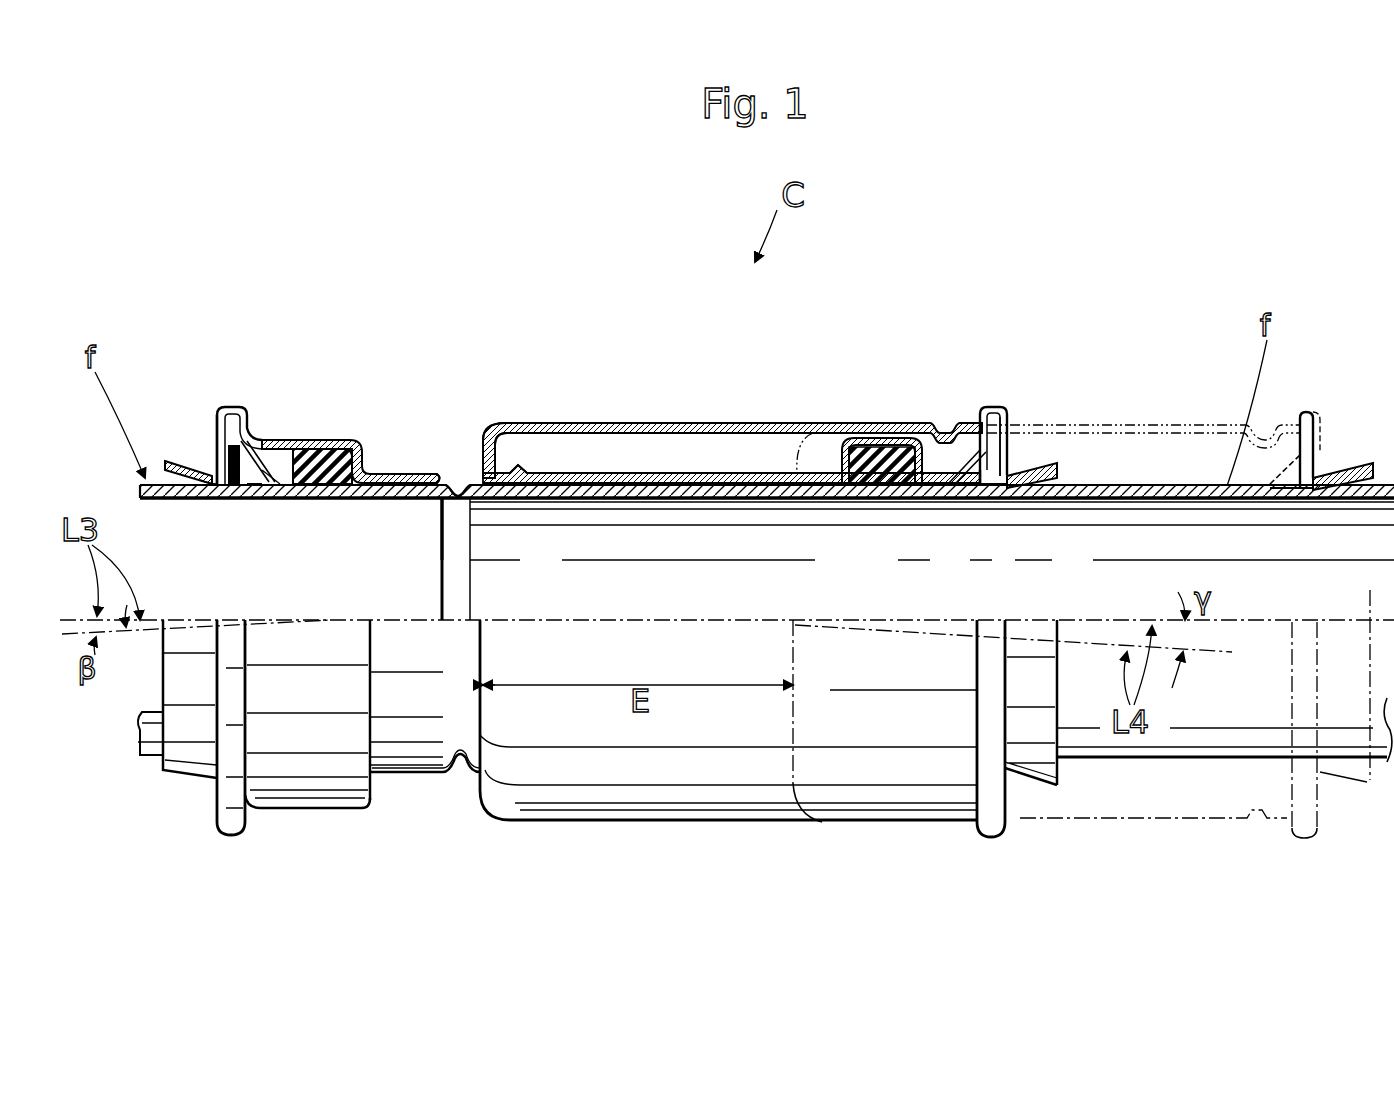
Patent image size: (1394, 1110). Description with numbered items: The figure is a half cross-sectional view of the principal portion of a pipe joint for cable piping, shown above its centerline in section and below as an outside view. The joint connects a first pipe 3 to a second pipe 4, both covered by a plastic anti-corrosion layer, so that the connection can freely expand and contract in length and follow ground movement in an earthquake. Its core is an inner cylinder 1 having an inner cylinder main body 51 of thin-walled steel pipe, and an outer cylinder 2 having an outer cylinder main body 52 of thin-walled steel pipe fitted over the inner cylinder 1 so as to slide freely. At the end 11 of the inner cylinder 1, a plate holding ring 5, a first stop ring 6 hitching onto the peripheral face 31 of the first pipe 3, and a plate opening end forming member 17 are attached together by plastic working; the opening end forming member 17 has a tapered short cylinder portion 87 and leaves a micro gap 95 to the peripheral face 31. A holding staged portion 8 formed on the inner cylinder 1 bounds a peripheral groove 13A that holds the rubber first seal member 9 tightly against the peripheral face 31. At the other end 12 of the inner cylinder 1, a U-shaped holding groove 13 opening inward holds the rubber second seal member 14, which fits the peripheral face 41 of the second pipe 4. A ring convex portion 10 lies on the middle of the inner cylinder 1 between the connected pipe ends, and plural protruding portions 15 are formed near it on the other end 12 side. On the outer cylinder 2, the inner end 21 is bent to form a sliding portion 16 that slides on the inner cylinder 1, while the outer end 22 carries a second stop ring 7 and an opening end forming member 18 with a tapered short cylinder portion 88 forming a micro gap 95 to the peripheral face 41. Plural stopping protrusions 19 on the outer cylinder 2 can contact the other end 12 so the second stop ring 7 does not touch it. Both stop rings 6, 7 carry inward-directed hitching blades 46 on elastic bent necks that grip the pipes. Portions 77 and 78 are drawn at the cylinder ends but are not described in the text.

The inner cylinder 1 is at (608, 467).
The outer cylinder 2 is at (713, 417).
The first pipe 3 is at (138, 535).
The second pipe 4 is at (1097, 483).
The holding ring 5 is at (282, 480).
The first stop ring 6 is at (243, 488).
The second stop ring 7 is at (975, 486).
The holding staged portion 8 is at (333, 452).
The first seal member 9 is at (330, 488).
The ring convex portion 10 is at (455, 510).
The end of inner cylinder 11 is at (233, 403).
The other end of inner cylinder 12 is at (870, 427).
The holding groove 13 is at (862, 440).
The peripheral groove 13A is at (300, 447).
The second seal member 14 is at (905, 486).
The protruding portions 15 is at (517, 470).
The sliding portion 16 is at (485, 434).
The opening end forming member 17 is at (193, 462).
The opening end forming member 18 is at (1012, 465).
The stopping protrusions 19 is at (972, 482).
The inner end of outer cylinder 21 is at (512, 416).
The outer end of outer cylinder 22 is at (990, 403).
The peripheral face of first pipe 31 is at (373, 476).
The peripheral face of second pipe 41 is at (1167, 488).
The hitching blades 46 is at (263, 460).
The inner cylinder main body 51 is at (422, 473).
The outer cylinder main body 52 is at (663, 423).
The wall portion 77 is at (220, 447).
The wall portion 78 is at (1007, 452).
The tapered short cylinder portion 87 is at (170, 482).
The tapered short cylinder portion 88 is at (1045, 480).
The micro gap 95 is at (473, 468).